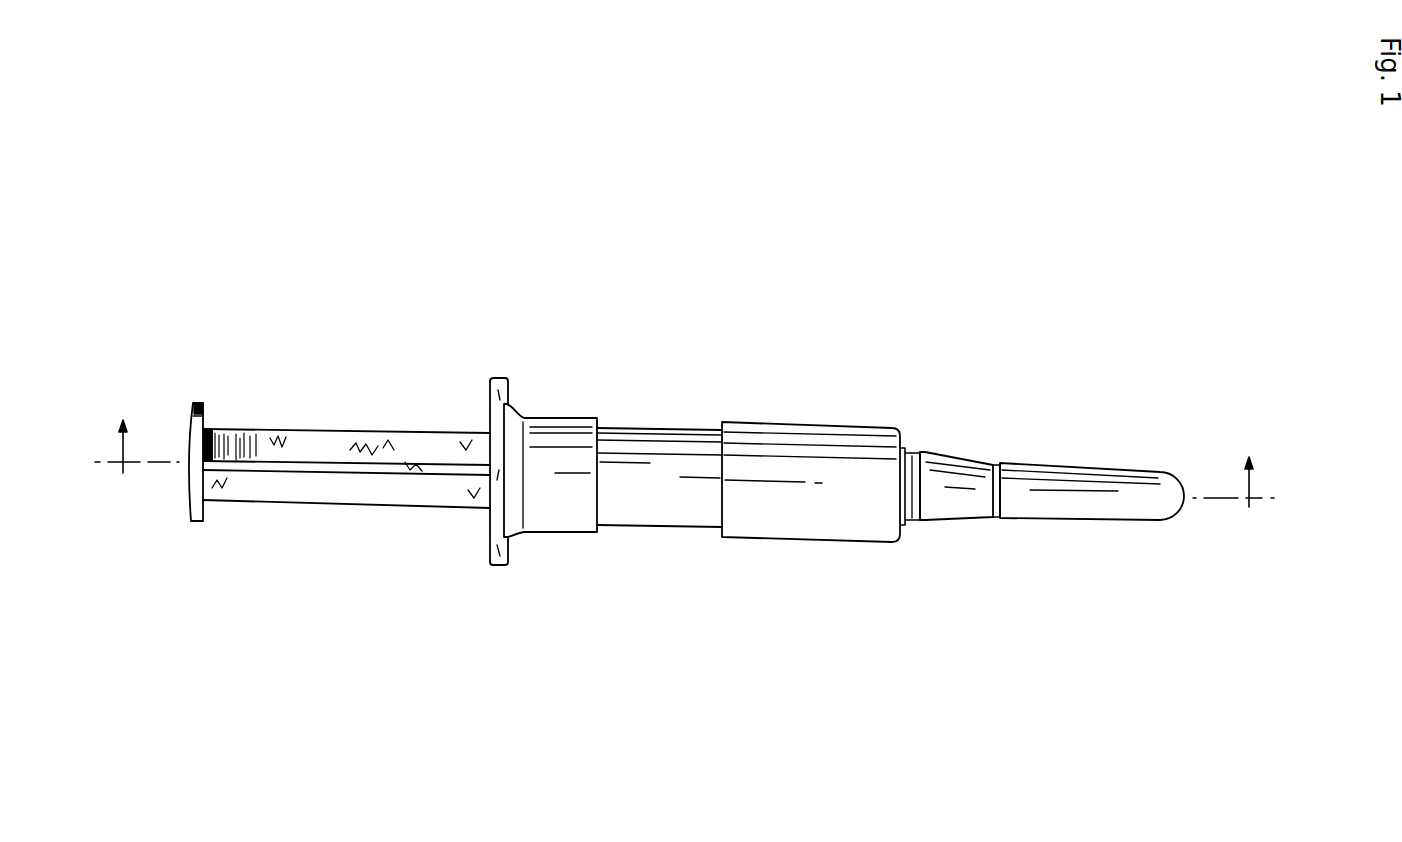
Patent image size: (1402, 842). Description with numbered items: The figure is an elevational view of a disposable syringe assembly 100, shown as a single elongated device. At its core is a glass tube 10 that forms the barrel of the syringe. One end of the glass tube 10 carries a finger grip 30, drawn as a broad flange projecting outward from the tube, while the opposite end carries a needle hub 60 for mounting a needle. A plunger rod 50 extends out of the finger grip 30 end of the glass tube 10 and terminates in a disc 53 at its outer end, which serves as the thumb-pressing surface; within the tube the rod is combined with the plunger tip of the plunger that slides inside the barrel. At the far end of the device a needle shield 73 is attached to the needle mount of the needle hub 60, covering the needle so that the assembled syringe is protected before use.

The disposable syringe assembly 100 is at (1073, 588).
The glass tube 10 is at (652, 467).
The finger grip 30 is at (510, 380).
The plunger rod 50 is at (290, 443).
The disc 53 is at (200, 403).
The needle hub 60 is at (825, 452).
The needle shield 73 is at (1070, 465).